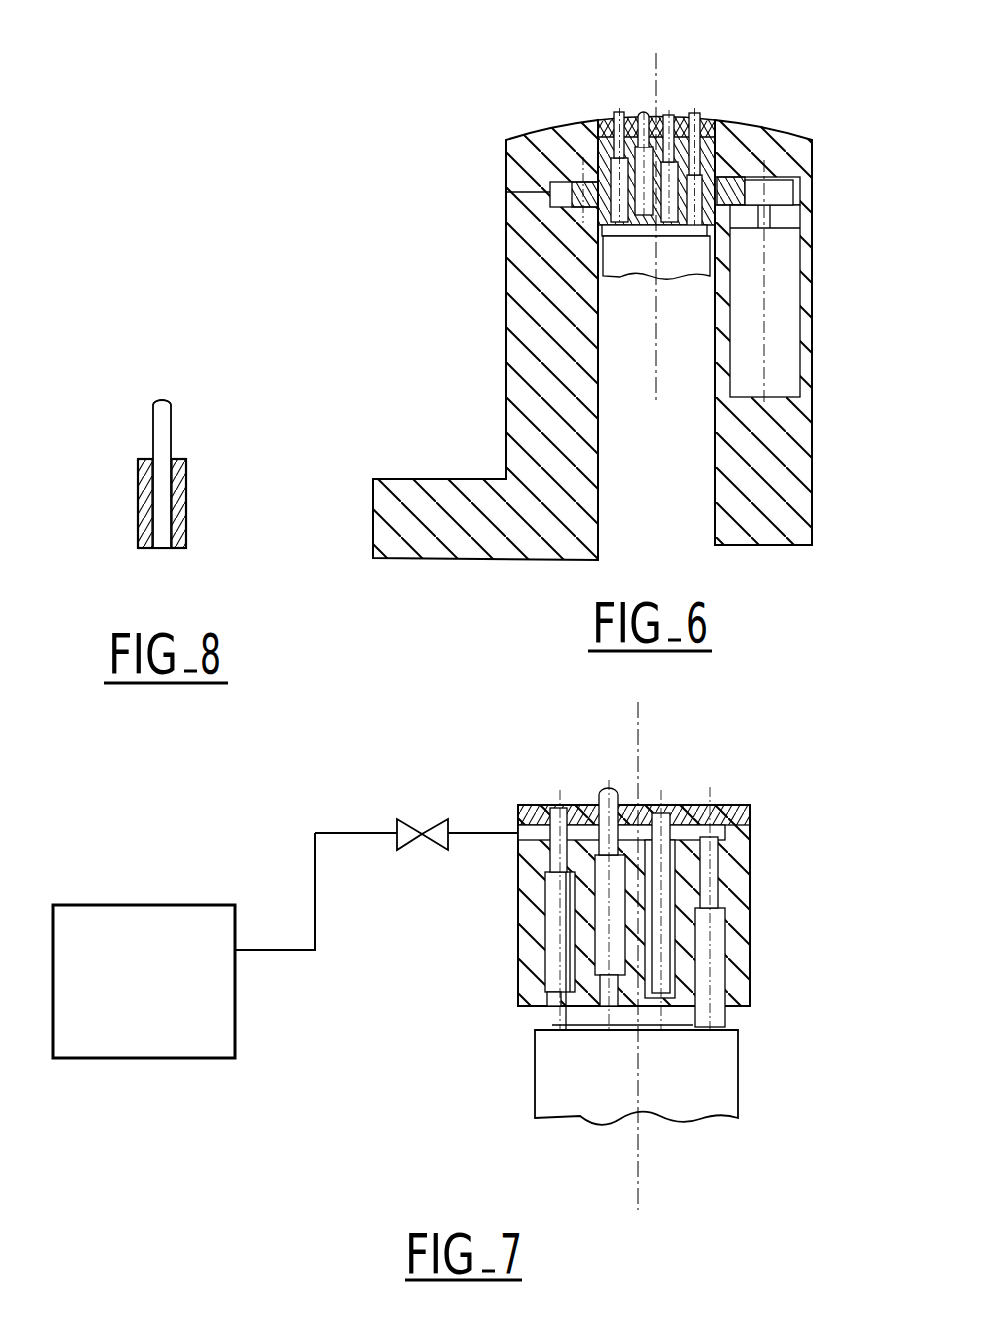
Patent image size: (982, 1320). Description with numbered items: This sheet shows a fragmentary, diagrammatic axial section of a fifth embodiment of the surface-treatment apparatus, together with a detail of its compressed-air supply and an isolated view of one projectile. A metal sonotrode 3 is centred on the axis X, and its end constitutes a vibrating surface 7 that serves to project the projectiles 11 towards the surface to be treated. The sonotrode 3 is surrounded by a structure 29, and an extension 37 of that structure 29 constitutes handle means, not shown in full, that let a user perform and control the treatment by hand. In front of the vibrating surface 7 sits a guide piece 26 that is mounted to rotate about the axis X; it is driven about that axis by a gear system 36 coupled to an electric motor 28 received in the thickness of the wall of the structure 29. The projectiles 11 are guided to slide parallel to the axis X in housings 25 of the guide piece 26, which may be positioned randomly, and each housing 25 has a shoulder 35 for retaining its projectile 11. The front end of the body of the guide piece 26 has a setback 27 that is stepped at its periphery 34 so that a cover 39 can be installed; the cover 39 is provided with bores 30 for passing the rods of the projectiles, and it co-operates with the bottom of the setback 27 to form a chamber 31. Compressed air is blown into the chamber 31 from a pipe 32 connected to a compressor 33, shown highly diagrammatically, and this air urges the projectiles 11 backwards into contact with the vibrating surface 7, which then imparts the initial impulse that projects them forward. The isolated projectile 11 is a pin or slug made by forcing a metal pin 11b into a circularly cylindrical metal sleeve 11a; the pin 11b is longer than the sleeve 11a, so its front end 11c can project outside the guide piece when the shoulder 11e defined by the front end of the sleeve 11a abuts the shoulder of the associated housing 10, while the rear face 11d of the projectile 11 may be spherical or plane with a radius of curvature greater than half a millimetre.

In FIG. 6, the sonotrode 3 is at (627, 258).
In FIG. 7, the sonotrode 3 is at (568, 1075).
In FIG. 6, the vibrating surface 7 is at (607, 230).
In FIG. 7, the vibrating surface 7 is at (552, 1025).
In FIG. 7, the housing 10 is at (730, 957).
In FIG. 8, the projectile 11 is at (170, 451).
In FIG. 8, the sleeve 11a is at (137, 508).
In FIG. 8, the pin 11b is at (155, 415).
In FIG. 8, the front end of the pin 11c is at (160, 410).
In FIG. 8, the rear face of the projectile 11d is at (160, 548).
In FIG. 8, the shoulder of the sleeve 11e is at (173, 458).
In FIG. 7, the housing of the guide piece 25 is at (730, 873).
In FIG. 7, the guide piece 26 is at (733, 898).
In FIG. 6, the setback 27 is at (701, 135).
In FIG. 7, the setback 27 is at (727, 803).
In FIG. 6, the electric motor 28 is at (782, 282).
In FIG. 6, the structure 29 is at (770, 482).
In FIG. 7, the bore 30 is at (705, 803).
In FIG. 7, the chamber 31 is at (624, 800).
In FIG. 7, the pipe 32 is at (470, 830).
In FIG. 7, the compressor 33 is at (152, 905).
In FIG. 7, the periphery of the setback 34 is at (513, 817).
In FIG. 7, the shoulder of the housing 35 is at (517, 858).
In FIG. 6, the gear system 36 is at (567, 193).
In FIG. 6, the extension of the structure 37 is at (432, 508).
In FIG. 7, the cover 39 is at (542, 807).
In FIG. 6, the axis X is at (653, 72).
In FIG. 7, the axis X is at (640, 1137).